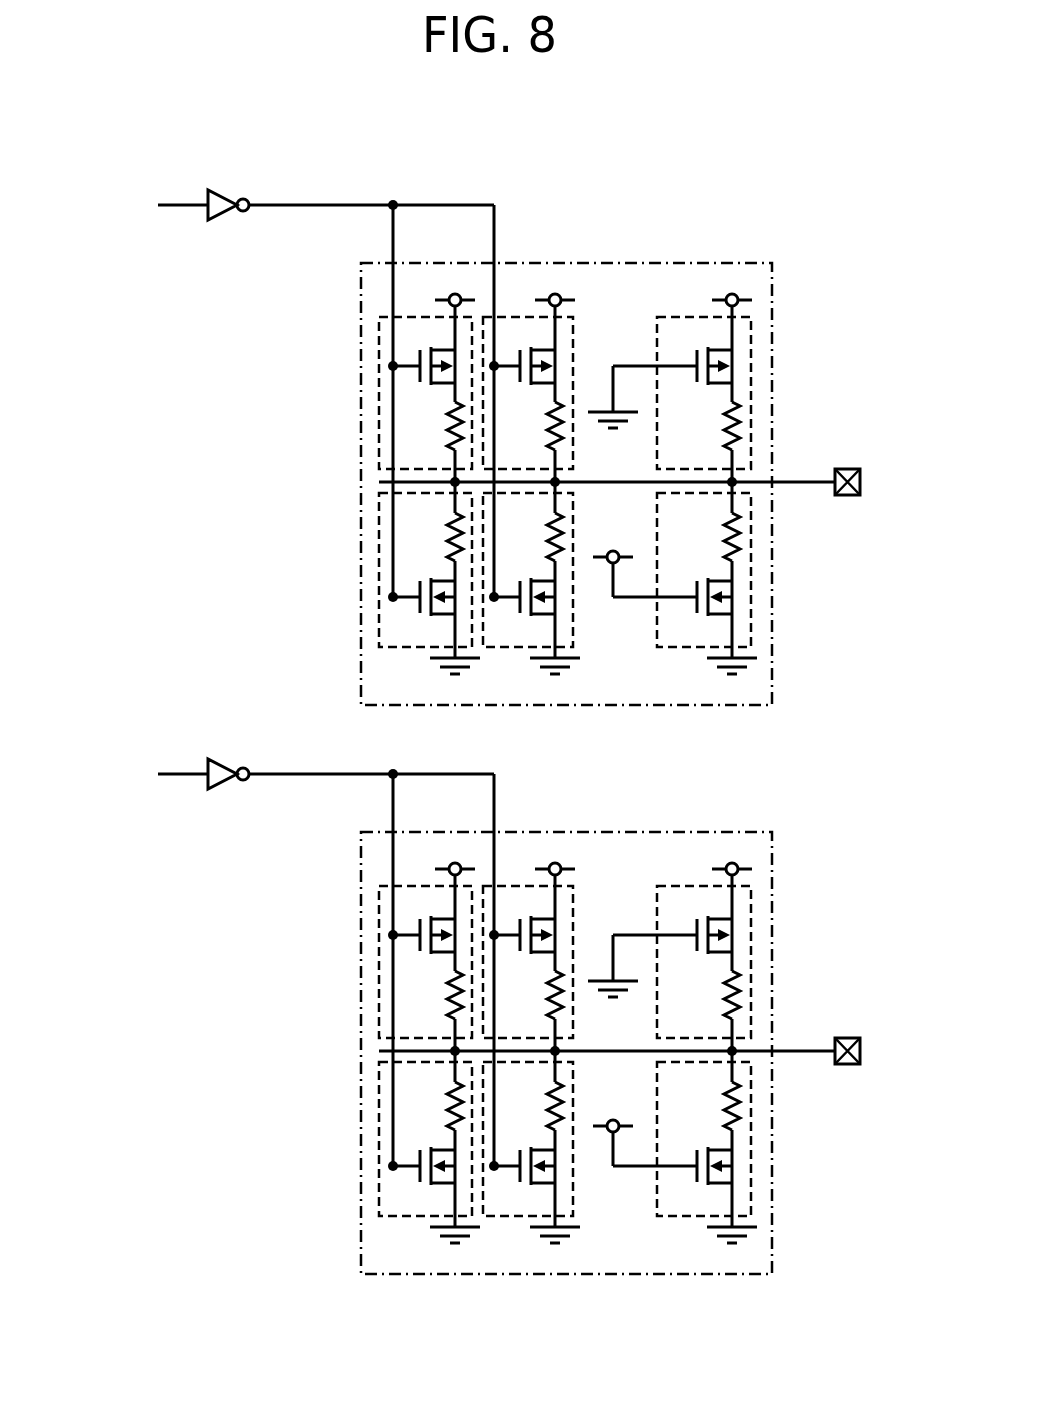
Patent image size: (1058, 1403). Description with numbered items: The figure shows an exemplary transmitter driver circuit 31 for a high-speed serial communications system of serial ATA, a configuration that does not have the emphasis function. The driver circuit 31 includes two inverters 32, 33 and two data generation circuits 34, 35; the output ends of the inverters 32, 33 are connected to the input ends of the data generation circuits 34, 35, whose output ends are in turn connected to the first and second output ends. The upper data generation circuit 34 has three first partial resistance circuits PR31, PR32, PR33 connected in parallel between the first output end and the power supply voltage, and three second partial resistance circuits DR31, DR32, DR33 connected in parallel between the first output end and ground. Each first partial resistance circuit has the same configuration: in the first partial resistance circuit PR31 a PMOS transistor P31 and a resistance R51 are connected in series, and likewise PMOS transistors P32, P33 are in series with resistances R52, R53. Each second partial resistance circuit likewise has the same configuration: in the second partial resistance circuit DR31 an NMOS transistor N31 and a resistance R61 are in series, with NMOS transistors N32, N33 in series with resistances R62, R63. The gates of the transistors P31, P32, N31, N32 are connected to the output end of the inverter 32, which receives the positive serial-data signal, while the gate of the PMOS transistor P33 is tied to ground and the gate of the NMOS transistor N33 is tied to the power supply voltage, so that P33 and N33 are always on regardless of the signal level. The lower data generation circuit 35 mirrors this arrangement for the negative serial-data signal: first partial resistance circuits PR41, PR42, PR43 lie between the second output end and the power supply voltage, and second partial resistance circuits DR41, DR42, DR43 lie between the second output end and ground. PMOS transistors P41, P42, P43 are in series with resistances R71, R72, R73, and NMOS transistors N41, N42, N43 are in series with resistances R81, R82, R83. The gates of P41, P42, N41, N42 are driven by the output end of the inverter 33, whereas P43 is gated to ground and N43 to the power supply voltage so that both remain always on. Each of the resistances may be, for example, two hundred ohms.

The driver circuit 31 is at (852, 226).
The inverter 32 is at (223, 193).
The inverter 33 is at (272, 751).
The data generation circuit 34 is at (330, 436).
The data generation circuit 35 is at (490, 993).
The first partial resistance circuit PR31 is at (402, 317).
The first partial resistance circuit PR32 is at (504, 317).
The first partial resistance circuit PR33 is at (682, 317).
The second partial resistance circuit DR31 is at (405, 648).
The second partial resistance circuit DR32 is at (507, 648).
The second partial resistance circuit DR33 is at (683, 648).
The PMOS transistor P31 is at (430, 354).
The PMOS transistor P32 is at (530, 354).
The PMOS transistor P33 is at (707, 354).
The NMOS transistor N31 is at (430, 610).
The NMOS transistor N32 is at (530, 610).
The NMOS transistor N33 is at (707, 610).
The resistance R51 is at (431, 426).
The resistance R52 is at (532, 426).
The resistance R53 is at (709, 426).
The resistance R61 is at (431, 537).
The resistance R62 is at (532, 537).
The resistance R63 is at (709, 537).
The first partial resistance circuit PR41 is at (427, 925).
The first partial resistance circuit PR42 is at (529, 925).
The first partial resistance circuit PR43 is at (704, 925).
The second partial resistance circuit DR41 is at (429, 1162).
The second partial resistance circuit DR42 is at (531, 1162).
The second partial resistance circuit DR43 is at (707, 1162).
The PMOS transistor P41 is at (430, 923).
The PMOS transistor P42 is at (530, 923).
The PMOS transistor P43 is at (707, 923).
The NMOS transistor N41 is at (430, 1179).
The NMOS transistor N42 is at (530, 1179).
The NMOS transistor N43 is at (707, 1179).
The resistance R71 is at (431, 995).
The resistance R72 is at (532, 995).
The resistance R73 is at (709, 995).
The resistance R81 is at (431, 1106).
The resistance R82 is at (532, 1106).
The resistance R83 is at (709, 1106).